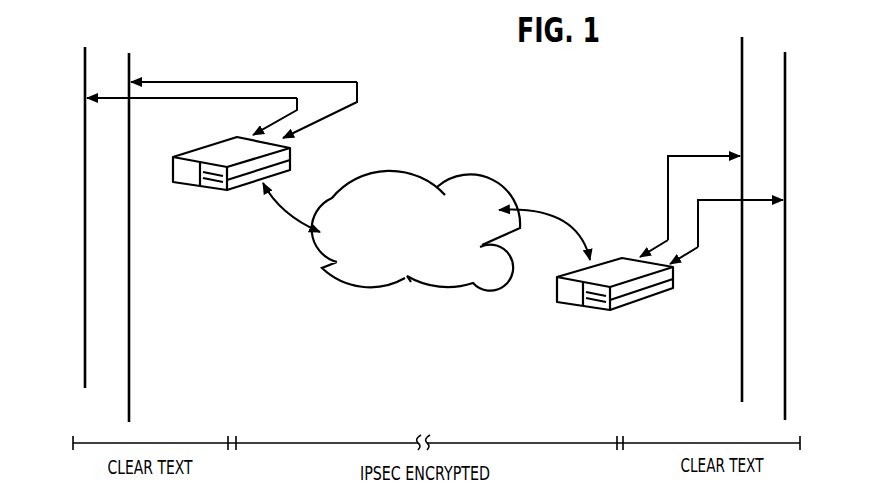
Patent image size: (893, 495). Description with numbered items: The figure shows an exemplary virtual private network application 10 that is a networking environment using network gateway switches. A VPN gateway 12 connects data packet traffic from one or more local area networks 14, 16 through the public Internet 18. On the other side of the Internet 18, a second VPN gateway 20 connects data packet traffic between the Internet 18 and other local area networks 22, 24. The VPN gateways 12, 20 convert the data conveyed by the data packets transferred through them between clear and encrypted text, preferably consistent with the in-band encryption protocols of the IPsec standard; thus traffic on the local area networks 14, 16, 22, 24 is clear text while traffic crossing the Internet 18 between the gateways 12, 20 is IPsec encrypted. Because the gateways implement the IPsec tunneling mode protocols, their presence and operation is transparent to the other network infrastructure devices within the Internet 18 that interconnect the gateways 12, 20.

The virtual private network application 10 is at (623, 63).
The VPN gateway 12 is at (222, 192).
The local area network 14 is at (84, 222).
The local area network 16 is at (132, 255).
The public Internet 18 is at (416, 231).
The second VPN gateway 20 is at (631, 303).
The local area network 22 is at (742, 313).
The local area network 24 is at (785, 315).